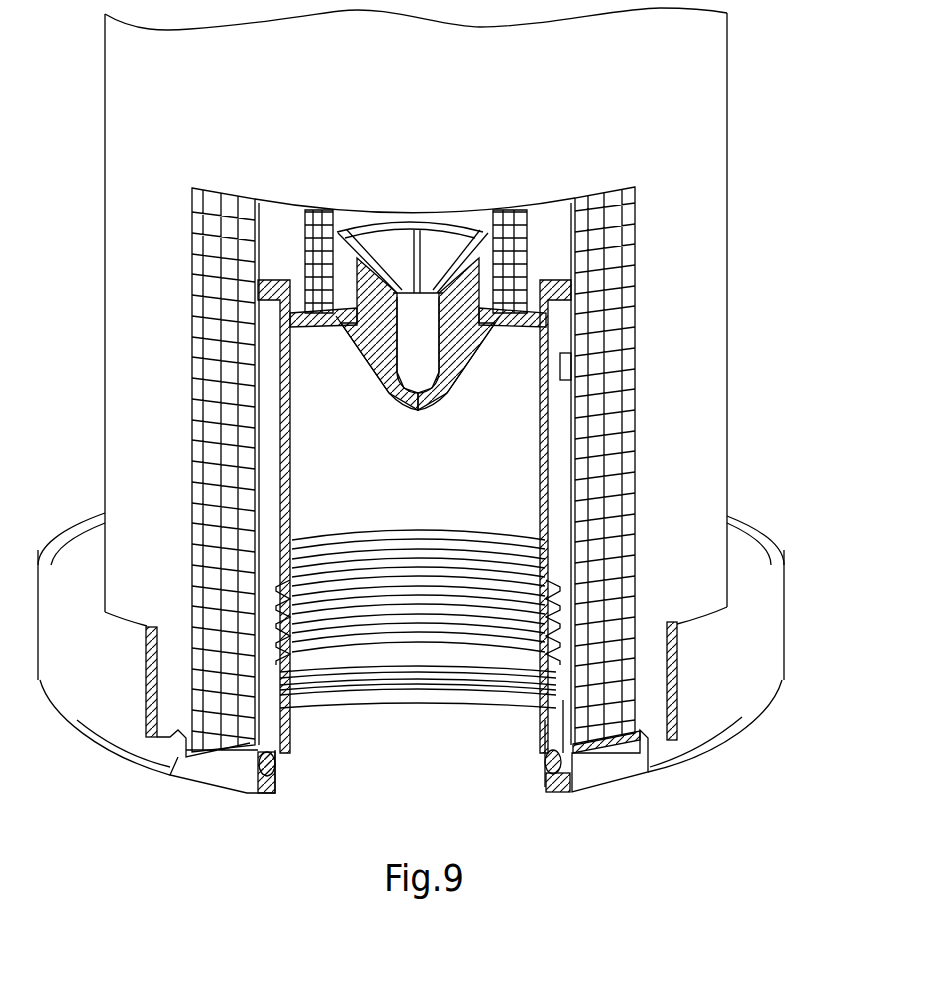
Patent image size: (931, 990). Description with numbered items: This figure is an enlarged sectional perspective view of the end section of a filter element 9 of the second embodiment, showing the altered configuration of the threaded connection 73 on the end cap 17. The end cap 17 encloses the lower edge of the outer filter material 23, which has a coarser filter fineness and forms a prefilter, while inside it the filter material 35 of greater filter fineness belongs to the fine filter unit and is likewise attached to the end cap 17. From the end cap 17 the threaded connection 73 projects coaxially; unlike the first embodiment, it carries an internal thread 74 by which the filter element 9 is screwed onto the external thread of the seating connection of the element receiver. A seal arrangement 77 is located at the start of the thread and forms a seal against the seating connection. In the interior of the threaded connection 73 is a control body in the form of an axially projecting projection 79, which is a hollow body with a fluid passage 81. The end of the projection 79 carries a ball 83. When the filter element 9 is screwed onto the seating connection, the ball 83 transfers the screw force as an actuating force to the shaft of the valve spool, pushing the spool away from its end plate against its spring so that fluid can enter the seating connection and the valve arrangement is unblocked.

The filter element 9 is at (755, 167).
The end cap 17 is at (178, 773).
The filter material 23 is at (623, 452).
The filter material 35 is at (508, 237).
The threaded connection 73 is at (547, 593).
The internal thread 74 is at (337, 680).
The seal arrangement 77 is at (545, 762).
The projection 79 is at (373, 343).
The fluid passage 81 is at (430, 397).
The ball 83 is at (412, 400).